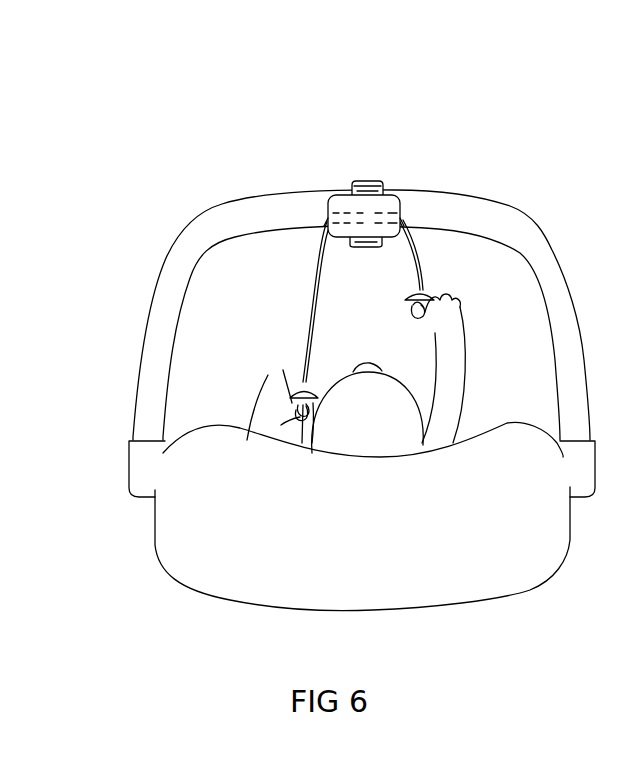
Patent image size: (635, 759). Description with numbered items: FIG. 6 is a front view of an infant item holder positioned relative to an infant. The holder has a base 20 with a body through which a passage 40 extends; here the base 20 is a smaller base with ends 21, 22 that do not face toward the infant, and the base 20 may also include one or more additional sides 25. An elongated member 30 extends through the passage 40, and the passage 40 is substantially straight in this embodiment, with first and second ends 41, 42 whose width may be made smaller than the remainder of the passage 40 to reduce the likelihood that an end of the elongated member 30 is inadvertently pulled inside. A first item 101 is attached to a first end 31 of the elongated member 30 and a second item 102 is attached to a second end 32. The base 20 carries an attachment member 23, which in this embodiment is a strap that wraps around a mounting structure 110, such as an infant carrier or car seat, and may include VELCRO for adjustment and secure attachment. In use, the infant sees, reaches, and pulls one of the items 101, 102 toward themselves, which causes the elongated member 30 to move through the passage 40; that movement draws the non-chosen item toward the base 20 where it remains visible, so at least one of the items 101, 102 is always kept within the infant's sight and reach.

The base 20 is at (401, 207).
The first side 21 is at (332, 209).
The second side 22 is at (402, 213).
The attachment member 23 is at (365, 184).
The additional side 25 is at (388, 196).
The elongated member 30 is at (307, 310).
The first end 31 is at (303, 393).
The second end 32 is at (418, 287).
The passage 40 is at (338, 207).
The first end of passage 41 is at (327, 216).
The second end of passage 42 is at (403, 212).
The first item 101 is at (300, 393).
The second item 102 is at (426, 298).
The mounting structure 110 is at (163, 300).